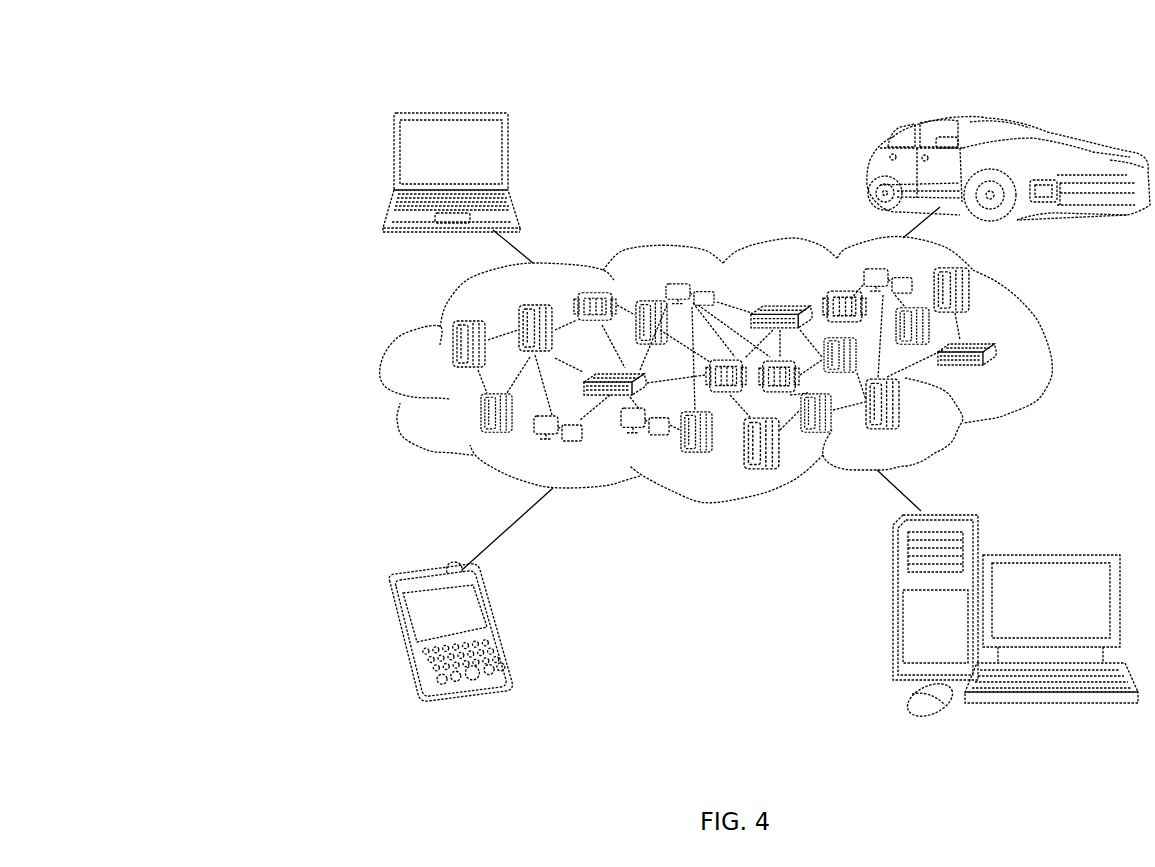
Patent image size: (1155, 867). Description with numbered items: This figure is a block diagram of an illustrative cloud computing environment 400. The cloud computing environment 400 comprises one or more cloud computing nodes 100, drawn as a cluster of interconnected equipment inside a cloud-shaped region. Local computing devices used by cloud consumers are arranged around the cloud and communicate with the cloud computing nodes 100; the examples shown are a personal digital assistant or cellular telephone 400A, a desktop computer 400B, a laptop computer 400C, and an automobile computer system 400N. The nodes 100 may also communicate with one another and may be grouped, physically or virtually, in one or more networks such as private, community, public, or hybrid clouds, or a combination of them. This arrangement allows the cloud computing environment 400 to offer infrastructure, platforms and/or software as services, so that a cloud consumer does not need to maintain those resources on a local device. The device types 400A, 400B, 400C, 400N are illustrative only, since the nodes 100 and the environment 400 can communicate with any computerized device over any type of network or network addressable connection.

The cloud computing environment 400 is at (286, 66).
The cloud computing nodes 100 is at (1008, 376).
The personal digital assistant (PDA) or cellular telephone 400A is at (500, 618).
The desktop computer 400B is at (1048, 555).
The laptop computer 400C is at (510, 160).
The automobile computer system 400N is at (868, 172).